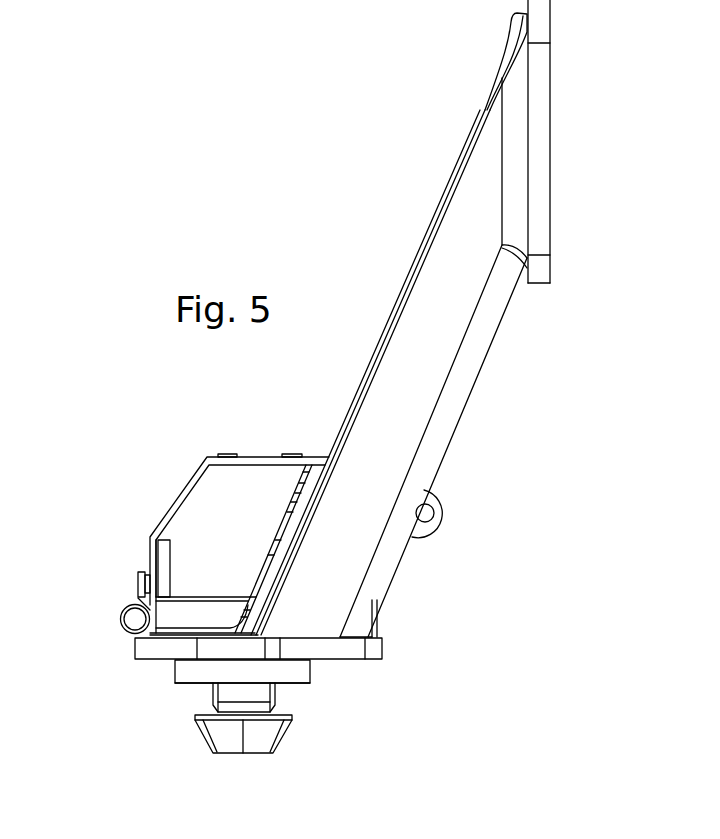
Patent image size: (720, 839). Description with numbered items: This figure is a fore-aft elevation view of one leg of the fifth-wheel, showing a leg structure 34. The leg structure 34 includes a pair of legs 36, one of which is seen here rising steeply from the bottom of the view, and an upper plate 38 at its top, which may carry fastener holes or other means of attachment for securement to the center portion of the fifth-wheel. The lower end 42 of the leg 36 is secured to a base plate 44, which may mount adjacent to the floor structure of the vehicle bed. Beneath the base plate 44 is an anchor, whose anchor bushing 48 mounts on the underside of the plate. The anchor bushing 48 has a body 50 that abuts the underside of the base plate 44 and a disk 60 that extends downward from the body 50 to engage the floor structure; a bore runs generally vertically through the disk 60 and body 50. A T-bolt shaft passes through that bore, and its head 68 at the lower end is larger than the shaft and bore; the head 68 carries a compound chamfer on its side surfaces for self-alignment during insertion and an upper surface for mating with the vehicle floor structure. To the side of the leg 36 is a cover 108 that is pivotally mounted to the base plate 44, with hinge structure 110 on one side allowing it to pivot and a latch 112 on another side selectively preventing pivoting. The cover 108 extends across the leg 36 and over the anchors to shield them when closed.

The leg structure 34 is at (297, 173).
The leg 36 is at (404, 280).
The upper plate 38 is at (545, 288).
The lower end 42 is at (352, 635).
The base plate 44 is at (382, 652).
The anchor bushing 48 is at (310, 675).
The body 50 is at (187, 685).
The disk 60 is at (272, 693).
The head 68 is at (205, 742).
The cover 108 is at (168, 513).
The hinge structure 110 is at (120, 620).
The latch 112 is at (447, 518).